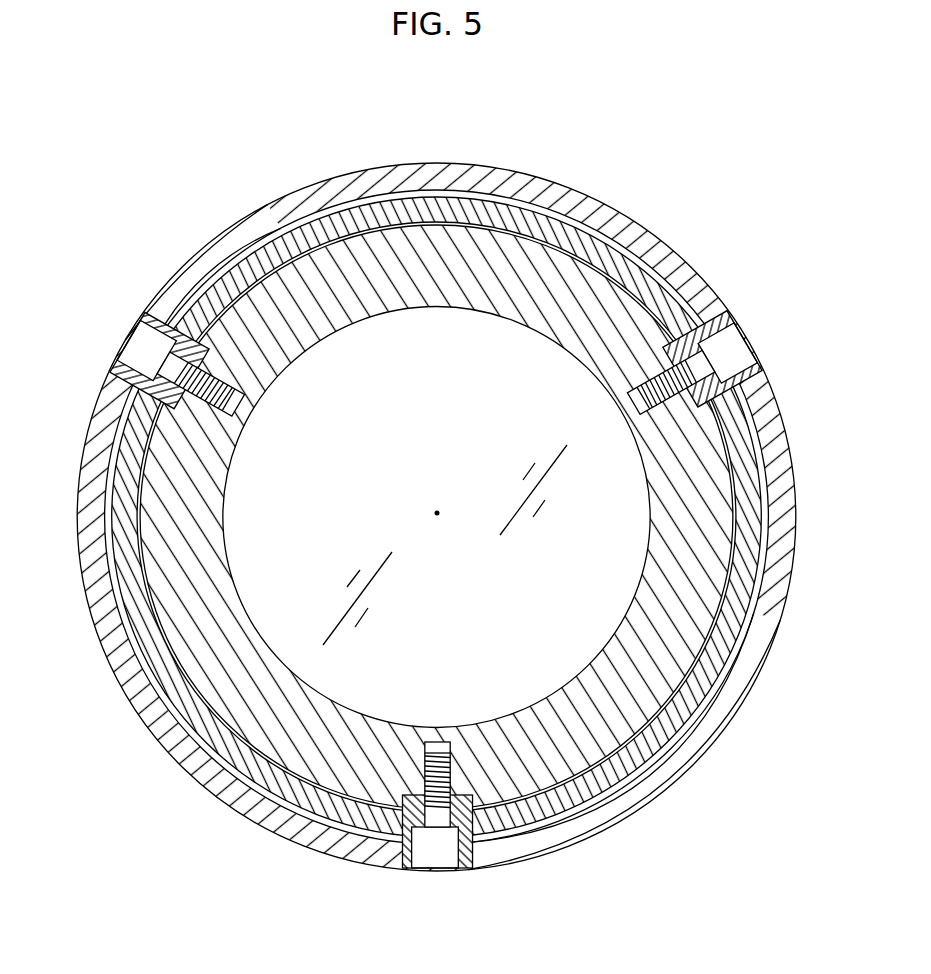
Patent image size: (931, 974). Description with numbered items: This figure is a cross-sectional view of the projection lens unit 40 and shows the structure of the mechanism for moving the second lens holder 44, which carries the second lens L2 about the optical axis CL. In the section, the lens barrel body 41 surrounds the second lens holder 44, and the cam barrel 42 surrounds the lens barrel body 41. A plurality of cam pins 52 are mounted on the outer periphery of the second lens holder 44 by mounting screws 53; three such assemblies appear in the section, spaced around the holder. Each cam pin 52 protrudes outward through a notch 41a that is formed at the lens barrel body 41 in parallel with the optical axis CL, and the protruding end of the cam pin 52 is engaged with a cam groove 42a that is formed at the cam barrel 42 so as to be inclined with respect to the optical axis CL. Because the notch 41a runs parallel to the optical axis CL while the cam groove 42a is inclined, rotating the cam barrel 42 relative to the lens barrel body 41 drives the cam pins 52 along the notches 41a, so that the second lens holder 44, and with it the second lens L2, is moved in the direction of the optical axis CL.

The projection lens unit 40 is at (568, 152).
The lens barrel body 41 is at (567, 240).
The cam barrel 42 is at (440, 178).
The second lens holder 44 is at (599, 293).
The cam groove 42a is at (731, 332).
The notch 41a is at (728, 345).
The cam pin 52 is at (468, 870).
The mounting screw 53 is at (428, 870).
The second lens L2 is at (558, 580).
The optical axis CL is at (437, 513).